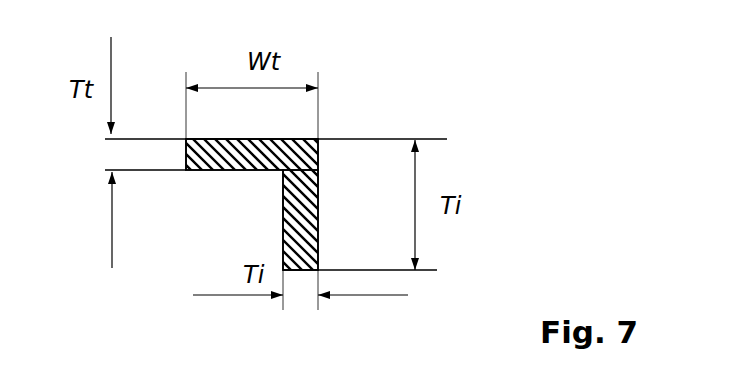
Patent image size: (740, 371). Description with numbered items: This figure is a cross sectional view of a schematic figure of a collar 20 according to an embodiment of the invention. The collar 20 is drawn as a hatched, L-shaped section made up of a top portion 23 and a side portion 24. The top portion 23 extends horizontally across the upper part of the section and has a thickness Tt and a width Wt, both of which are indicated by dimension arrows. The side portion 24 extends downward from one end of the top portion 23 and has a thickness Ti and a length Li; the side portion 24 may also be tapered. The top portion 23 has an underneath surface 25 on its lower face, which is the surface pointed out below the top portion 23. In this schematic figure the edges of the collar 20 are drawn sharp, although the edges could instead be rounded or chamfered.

The collar 20 is at (376, 116).
The top portion 23 is at (206, 140).
The side portion 24 is at (283, 211).
The underneath surface 25 is at (213, 172).